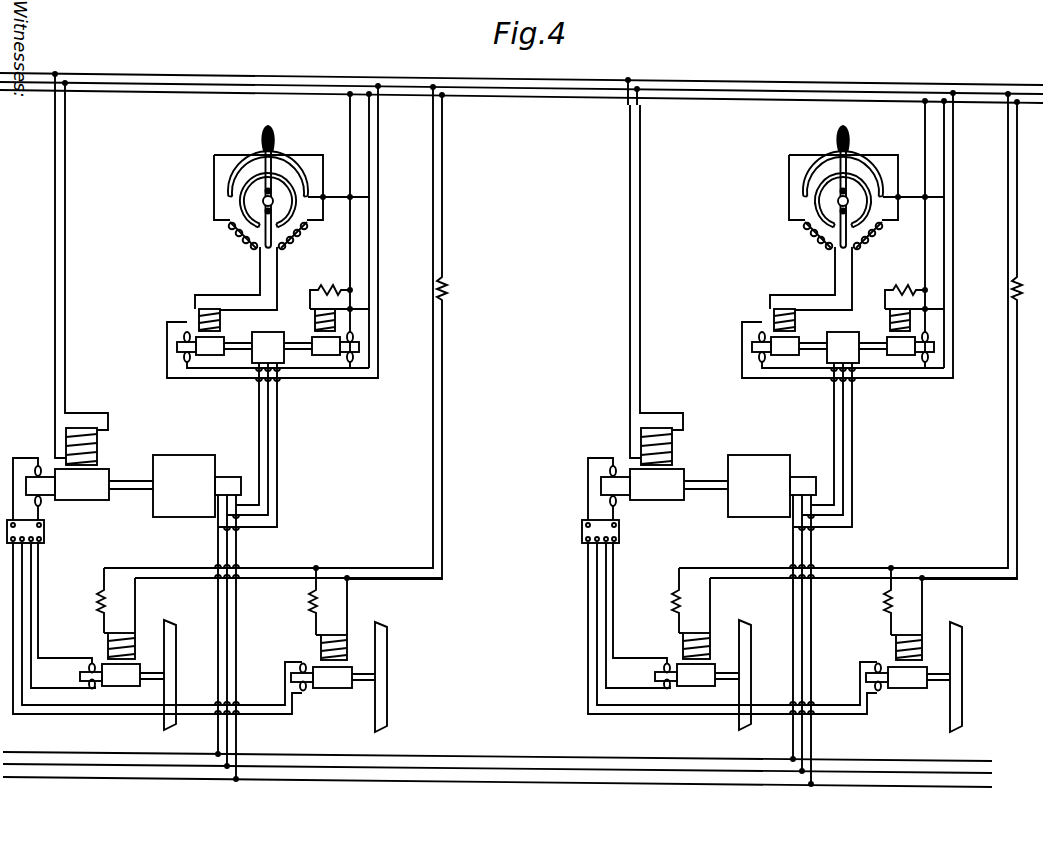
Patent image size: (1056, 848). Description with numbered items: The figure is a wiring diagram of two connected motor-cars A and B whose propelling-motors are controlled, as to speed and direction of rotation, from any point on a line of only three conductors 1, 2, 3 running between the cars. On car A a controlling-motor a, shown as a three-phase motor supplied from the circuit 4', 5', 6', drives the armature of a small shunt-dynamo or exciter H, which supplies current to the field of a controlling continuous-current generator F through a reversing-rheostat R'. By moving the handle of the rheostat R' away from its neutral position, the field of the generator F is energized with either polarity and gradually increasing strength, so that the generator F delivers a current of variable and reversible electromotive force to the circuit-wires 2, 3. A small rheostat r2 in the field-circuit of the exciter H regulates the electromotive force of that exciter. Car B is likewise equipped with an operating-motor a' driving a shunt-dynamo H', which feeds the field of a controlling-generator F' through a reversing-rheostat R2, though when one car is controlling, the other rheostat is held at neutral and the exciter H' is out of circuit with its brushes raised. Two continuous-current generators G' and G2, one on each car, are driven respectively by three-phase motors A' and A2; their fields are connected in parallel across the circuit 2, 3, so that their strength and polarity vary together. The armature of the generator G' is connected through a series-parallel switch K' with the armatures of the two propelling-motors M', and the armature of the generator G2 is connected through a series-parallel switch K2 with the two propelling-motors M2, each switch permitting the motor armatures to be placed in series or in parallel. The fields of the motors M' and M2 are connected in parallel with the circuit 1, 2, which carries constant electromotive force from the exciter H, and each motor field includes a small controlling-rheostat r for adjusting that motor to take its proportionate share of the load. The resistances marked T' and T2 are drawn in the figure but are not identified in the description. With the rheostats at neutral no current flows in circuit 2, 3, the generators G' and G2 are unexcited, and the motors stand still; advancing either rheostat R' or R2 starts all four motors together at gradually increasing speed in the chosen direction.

The circuit-wire 1 is at (459, 95).
The circuit-wire 2 is at (477, 87).
The circuit-wire 3 is at (494, 79).
The supply-circuit wire 4' is at (497, 746).
The supply-circuit wire 5' is at (497, 752).
The supply-circuit wire 6' is at (497, 759).
The car A is at (248, 414).
The car B is at (822, 418).
The reversing-rheostat R' is at (282, 218).
The reversing-rheostat R2 is at (857, 218).
The controlling continuous-current generator F is at (200, 335).
The controlling-motor a is at (265, 424).
The shunt-dynamo (exciter) H is at (335, 335).
The controlling continuous-current generator F' is at (775, 335).
The operating-motor a' is at (840, 424).
The shunt-dynamo (exciter) H' is at (910, 335).
The small rheostat r2 is at (339, 288).
The resistance T2 is at (914, 288).
The resistance T' is at (697, 342).
The controlling-rheostat r is at (502, 601).
The continuous-current generator G' is at (83, 474).
The three-phase motor A' is at (197, 600).
The series-parallel switch K' is at (154, 617).
The propelling-motor M' is at (233, 655).
The continuous-current generator G2 is at (658, 474).
The three-phase motor A2 is at (772, 600).
The series-parallel switch K2 is at (729, 617).
The propelling-motor M2 is at (808, 655).